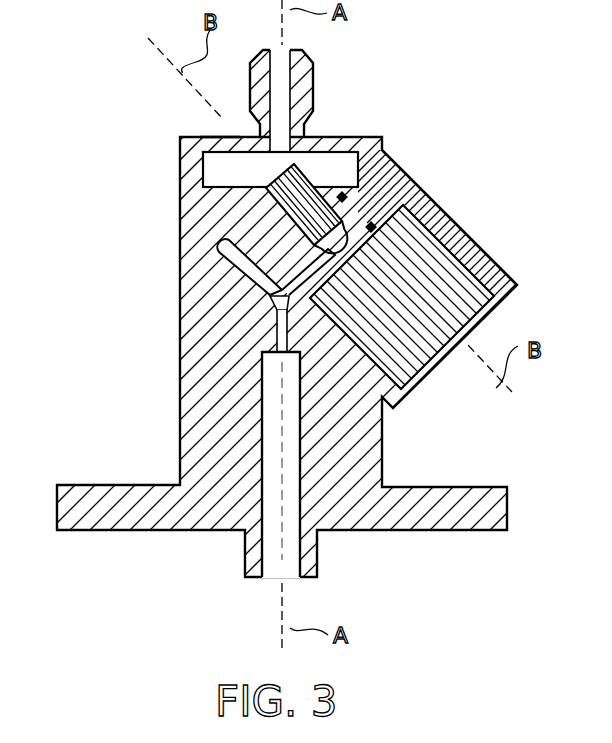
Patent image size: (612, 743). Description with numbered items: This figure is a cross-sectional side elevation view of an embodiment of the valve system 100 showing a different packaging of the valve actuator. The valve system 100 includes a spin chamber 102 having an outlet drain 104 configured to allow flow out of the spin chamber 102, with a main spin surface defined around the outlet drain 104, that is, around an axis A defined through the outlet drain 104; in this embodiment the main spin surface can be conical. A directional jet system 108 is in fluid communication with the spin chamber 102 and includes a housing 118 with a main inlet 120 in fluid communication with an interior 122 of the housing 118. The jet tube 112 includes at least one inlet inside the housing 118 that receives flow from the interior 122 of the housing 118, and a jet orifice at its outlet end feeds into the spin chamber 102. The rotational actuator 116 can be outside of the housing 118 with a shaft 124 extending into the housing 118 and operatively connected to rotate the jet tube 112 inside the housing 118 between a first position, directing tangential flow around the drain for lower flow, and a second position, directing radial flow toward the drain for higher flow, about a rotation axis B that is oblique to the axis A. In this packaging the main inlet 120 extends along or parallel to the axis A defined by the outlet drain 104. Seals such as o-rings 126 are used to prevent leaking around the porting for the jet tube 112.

The valve system 100 is at (78, 100).
The spin chamber 102 is at (232, 254).
The outlet drain 104 is at (303, 314).
The directional jet system 108 is at (306, 371).
The jet tube 112 is at (393, 166).
The rotational actuator 116 is at (245, 277).
The housing 118 is at (218, 142).
The main inlet 120 is at (313, 82).
The interior of the housing 122 is at (340, 163).
The shaft 124 is at (358, 247).
The o-rings 126 is at (305, 236).